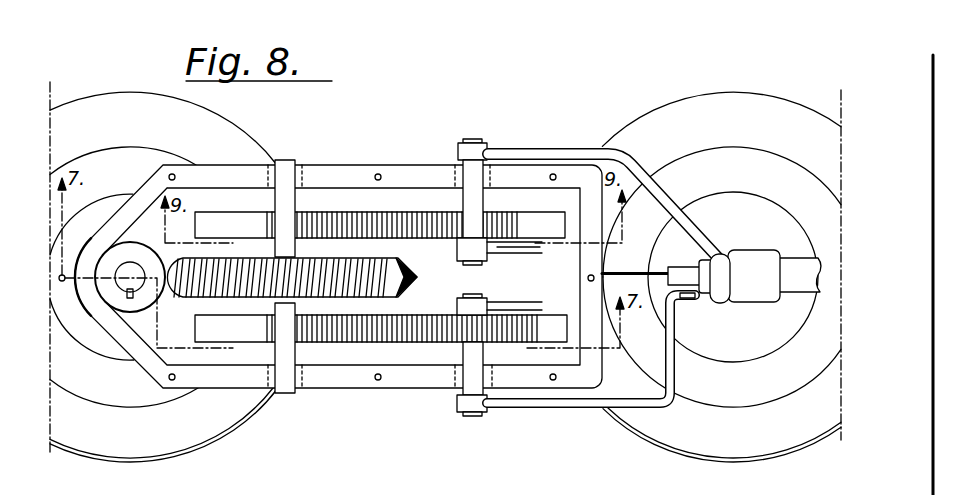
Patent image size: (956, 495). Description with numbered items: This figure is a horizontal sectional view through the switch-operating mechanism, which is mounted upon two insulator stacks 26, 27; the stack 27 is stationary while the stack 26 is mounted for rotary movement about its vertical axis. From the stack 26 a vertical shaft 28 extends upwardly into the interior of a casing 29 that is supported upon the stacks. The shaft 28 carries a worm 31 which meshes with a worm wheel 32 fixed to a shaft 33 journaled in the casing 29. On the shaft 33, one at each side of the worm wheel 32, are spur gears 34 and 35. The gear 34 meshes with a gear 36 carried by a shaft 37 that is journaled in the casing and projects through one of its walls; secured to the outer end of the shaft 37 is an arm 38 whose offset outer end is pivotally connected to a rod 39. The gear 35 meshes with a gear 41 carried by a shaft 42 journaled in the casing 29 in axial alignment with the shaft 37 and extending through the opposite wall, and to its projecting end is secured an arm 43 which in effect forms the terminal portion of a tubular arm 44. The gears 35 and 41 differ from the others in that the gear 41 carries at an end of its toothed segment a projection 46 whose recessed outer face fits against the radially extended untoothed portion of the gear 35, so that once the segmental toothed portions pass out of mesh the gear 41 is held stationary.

The insulator stack 26 is at (92, 443).
The insulator stack 27 is at (680, 438).
The vertical shaft 28 is at (131, 292).
The casing 29 is at (363, 167).
The worm 31 is at (110, 265).
The worm wheel 32 is at (416, 277).
The shaft 33 is at (288, 349).
The spur gear 34 is at (360, 332).
The spur gear 35 is at (313, 222).
The gear 36 is at (447, 332).
The shaft 37 is at (477, 357).
The arm 38 is at (538, 406).
The rod 39 is at (708, 262).
The gear 41 is at (408, 215).
The shaft 42 is at (478, 263).
The arm 43 is at (550, 148).
The tubular arm 44 is at (793, 292).
The projection 46 is at (487, 230).